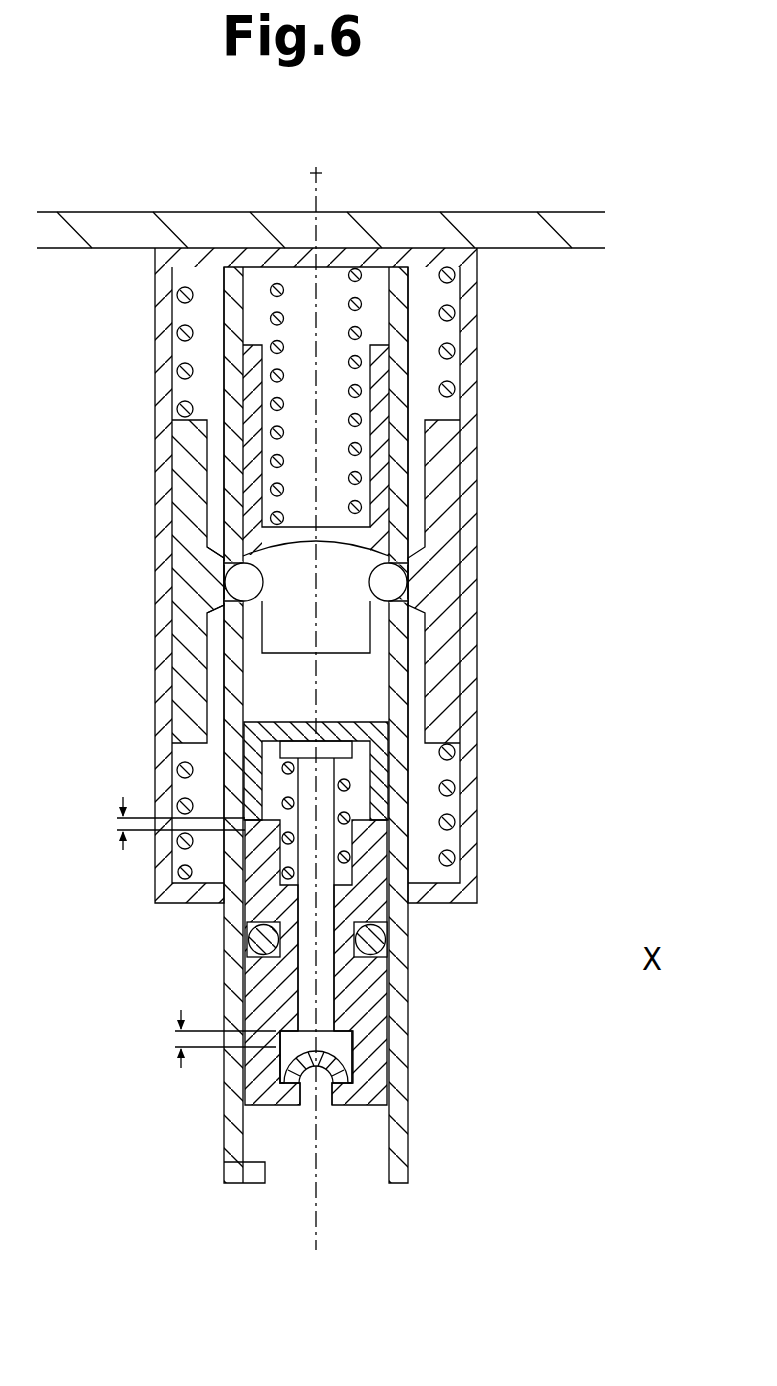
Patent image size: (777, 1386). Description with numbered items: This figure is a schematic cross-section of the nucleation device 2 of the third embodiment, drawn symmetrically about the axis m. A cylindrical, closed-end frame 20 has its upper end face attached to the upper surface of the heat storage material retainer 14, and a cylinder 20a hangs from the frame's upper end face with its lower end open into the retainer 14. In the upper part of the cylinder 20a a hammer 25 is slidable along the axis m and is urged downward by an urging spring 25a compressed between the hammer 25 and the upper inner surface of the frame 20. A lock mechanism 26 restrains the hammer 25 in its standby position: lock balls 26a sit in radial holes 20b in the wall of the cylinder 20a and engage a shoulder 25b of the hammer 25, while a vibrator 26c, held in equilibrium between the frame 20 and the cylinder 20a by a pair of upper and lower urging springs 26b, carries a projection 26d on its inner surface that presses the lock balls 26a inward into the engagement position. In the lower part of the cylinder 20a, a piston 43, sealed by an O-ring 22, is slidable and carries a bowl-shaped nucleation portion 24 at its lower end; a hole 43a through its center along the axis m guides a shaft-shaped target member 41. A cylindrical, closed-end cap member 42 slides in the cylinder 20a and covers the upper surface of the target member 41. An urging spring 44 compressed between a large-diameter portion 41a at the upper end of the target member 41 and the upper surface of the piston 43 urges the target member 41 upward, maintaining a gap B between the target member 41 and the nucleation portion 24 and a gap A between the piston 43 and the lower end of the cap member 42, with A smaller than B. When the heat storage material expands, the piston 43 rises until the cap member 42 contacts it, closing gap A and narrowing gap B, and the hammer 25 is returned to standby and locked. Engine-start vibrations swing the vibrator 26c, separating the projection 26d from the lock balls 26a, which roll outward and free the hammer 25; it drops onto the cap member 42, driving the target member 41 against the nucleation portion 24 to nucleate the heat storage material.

The nucleation device 2 is at (330, 715).
The heat storage material retainer 14 is at (560, 212).
The frame 20 is at (470, 432).
The cylinder 20a is at (400, 372).
The holes 20b is at (222, 608).
The O-ring 22 is at (389, 942).
The nucleation portion 24 is at (356, 1045).
The hammer 25 is at (312, 471).
The urging spring 25a is at (277, 319).
The shoulder 25b is at (398, 560).
The lock mechanism 26 is at (311, 594).
The lock balls 26a is at (225, 588).
The urging springs 26b is at (450, 310).
The vibrator 26c is at (447, 470).
The projection 26d is at (227, 562).
The target member 41 is at (423, 881).
The large-diameter portion 41a is at (356, 750).
The cap member 42 is at (374, 722).
The piston 43 is at (320, 962).
The hole 43a is at (300, 968).
The urging spring 44 is at (351, 800).
The axis m is at (320, 173).
The gap A is at (165, 823).
The gap B is at (208, 1039).